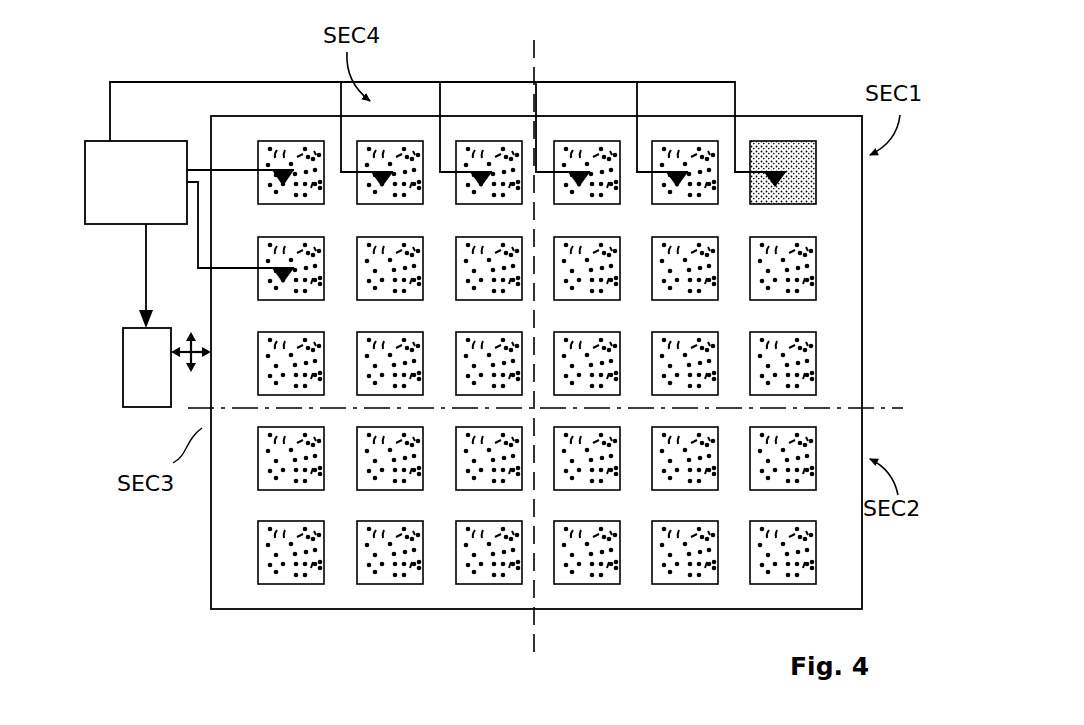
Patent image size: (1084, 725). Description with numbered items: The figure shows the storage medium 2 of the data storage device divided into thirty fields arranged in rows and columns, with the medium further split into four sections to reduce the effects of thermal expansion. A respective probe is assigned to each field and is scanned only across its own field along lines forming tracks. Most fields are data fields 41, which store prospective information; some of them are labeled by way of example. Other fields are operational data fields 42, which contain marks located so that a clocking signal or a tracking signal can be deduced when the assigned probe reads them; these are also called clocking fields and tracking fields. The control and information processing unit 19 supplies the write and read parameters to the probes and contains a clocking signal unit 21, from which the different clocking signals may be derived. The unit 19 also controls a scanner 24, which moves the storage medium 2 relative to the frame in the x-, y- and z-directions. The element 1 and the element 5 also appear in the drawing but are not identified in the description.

The housing / substrate 1 is at (800, 115).
The storage medium 2 is at (245, 506).
The sample particles 5 is at (699, 436).
The control and information processing unit 19 is at (107, 226).
The clocking signal unit 21 is at (231, 173).
The scanner 24 is at (122, 386).
The data fields 41 is at (402, 200).
The operational data fields 42 is at (300, 203).